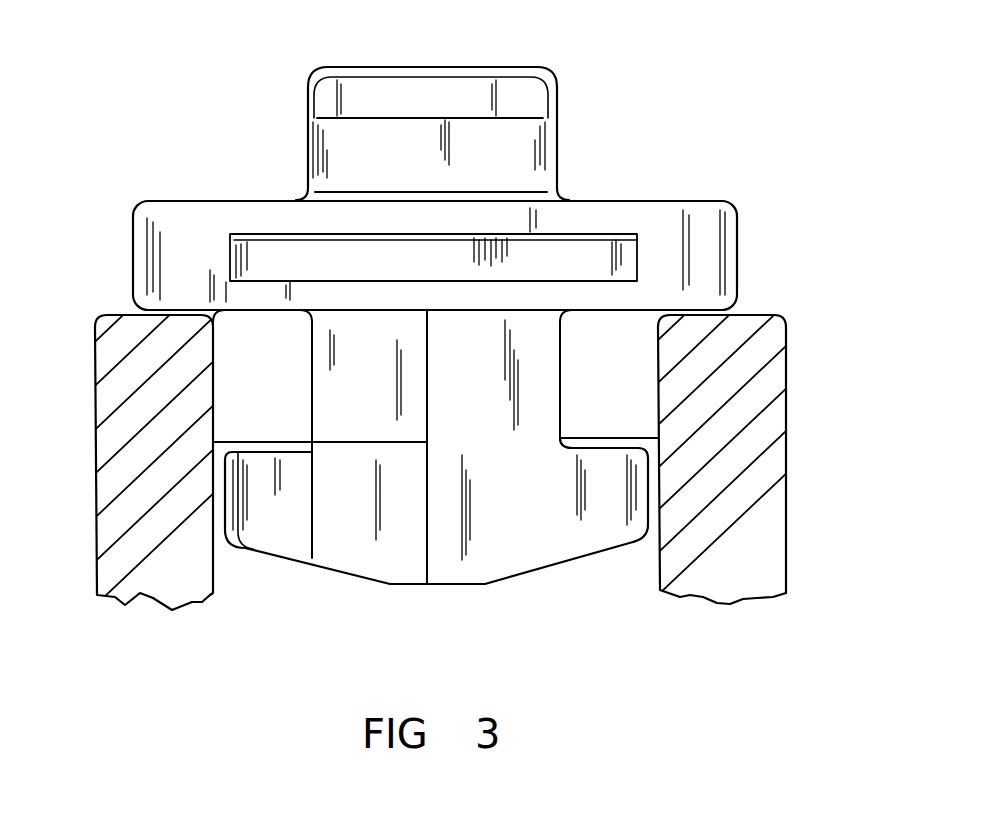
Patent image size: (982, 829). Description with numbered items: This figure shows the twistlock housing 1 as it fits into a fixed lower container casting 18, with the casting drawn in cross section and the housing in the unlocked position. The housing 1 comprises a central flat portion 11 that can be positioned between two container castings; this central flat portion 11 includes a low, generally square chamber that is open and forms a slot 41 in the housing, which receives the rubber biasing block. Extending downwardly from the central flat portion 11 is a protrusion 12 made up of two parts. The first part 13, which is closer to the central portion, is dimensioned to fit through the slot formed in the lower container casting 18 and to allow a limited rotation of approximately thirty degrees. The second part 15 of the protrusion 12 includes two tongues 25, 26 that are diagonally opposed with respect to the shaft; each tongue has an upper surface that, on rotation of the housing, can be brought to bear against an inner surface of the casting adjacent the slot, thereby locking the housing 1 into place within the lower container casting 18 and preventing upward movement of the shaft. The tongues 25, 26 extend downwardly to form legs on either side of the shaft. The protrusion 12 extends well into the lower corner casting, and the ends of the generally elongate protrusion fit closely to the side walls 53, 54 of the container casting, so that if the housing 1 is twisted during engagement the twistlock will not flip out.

The housing 1 is at (534, 96).
The central flat portion 11 is at (748, 245).
The slot 41 is at (562, 255).
The lower container casting 18 is at (727, 413).
The second part 15 is at (382, 556).
The first part 13 is at (345, 393).
The protrusion 12 is at (620, 438).
The tongue 25 is at (280, 522).
The tongue 26 is at (582, 523).
The side wall 54 is at (222, 496).
The side wall 53 is at (655, 490).